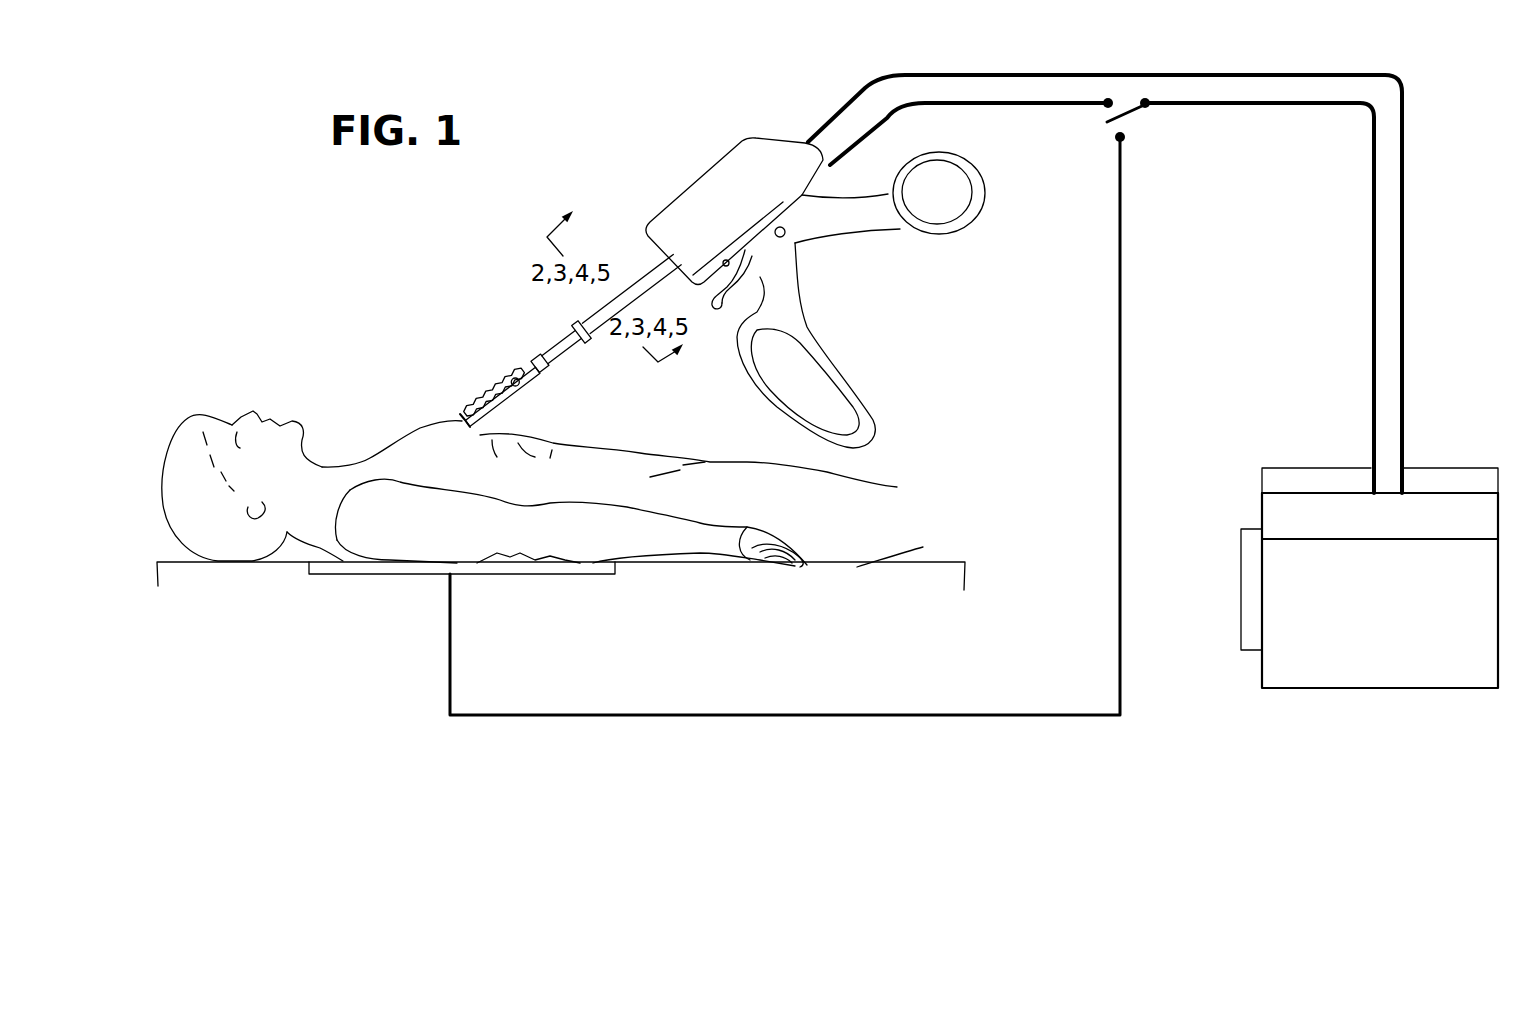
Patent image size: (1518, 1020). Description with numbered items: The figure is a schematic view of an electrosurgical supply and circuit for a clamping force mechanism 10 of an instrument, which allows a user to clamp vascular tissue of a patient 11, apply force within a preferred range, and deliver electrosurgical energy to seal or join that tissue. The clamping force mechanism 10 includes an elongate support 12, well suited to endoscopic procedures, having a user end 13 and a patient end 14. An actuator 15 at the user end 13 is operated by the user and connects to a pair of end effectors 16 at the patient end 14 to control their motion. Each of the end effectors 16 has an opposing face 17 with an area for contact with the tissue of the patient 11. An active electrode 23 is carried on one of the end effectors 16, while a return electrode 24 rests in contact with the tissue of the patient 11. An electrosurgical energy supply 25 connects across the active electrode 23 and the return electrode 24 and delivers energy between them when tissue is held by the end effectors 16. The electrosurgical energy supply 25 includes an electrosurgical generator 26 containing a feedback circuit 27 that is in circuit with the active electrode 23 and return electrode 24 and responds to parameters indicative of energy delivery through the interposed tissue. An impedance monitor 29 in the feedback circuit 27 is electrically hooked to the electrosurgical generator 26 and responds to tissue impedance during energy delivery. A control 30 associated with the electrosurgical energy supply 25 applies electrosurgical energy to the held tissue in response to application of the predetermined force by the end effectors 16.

The clamping force mechanism 10 is at (704, 267).
The patient 11 is at (383, 447).
The elongate support 12 is at (567, 343).
The user end 13 is at (750, 138).
The patient end 14 is at (540, 372).
The actuator 15 is at (1000, 188).
The end effectors 16 is at (513, 400).
The opposing face 17 is at (490, 395).
The active electrode 23 is at (462, 415).
The return electrode 24 is at (495, 575).
The electrosurgical energy supply 25 is at (1370, 613).
The electrosurgical generator 26 is at (1370, 530).
The feedback circuit 27 is at (1438, 478).
The impedance monitor 29 is at (1369, 477).
The control 30 is at (1240, 580).